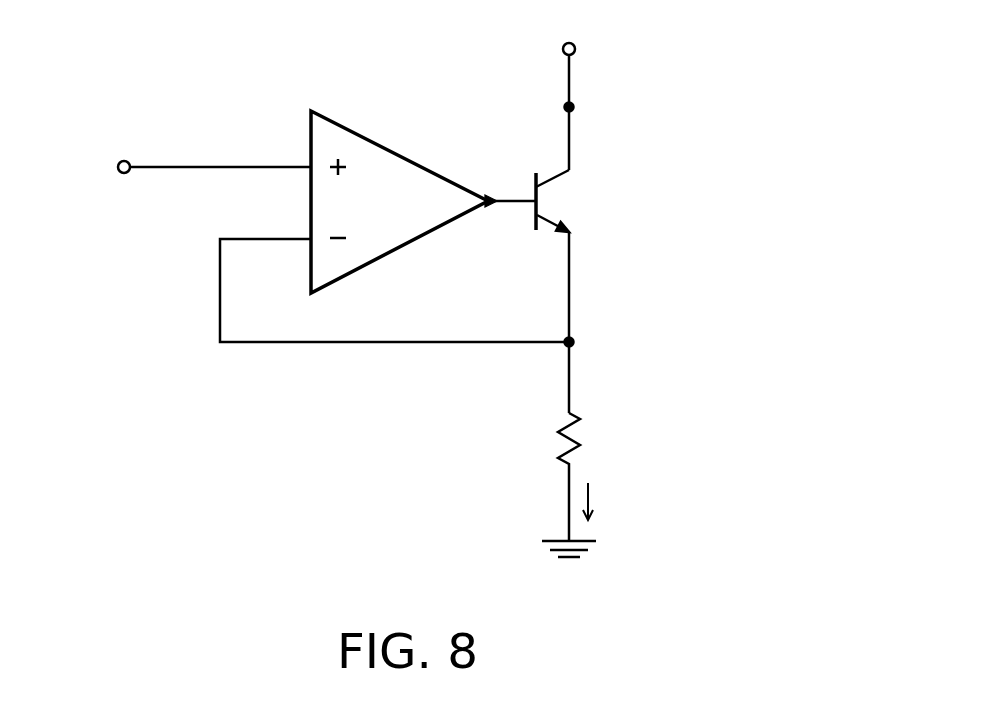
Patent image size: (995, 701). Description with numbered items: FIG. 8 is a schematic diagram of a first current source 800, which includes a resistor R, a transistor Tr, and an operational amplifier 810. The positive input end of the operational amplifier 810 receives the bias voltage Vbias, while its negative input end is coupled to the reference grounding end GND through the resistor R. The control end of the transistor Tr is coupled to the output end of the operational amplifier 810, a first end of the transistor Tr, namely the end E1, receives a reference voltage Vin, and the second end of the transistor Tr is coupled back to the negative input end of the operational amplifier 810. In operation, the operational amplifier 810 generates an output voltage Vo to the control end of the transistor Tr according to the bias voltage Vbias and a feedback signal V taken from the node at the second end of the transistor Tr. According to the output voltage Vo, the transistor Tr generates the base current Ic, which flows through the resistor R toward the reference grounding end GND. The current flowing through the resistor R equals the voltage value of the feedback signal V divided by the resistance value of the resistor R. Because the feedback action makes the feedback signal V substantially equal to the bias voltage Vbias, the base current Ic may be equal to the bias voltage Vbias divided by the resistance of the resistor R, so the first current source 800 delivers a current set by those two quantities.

The first current source 800 is at (412, 308).
The operational amplifier 810 is at (403, 157).
The bias voltage Vbias is at (189, 159).
The reference voltage Vin is at (570, 57).
The end E1 is at (586, 130).
The transistor Tr is at (567, 256).
The output voltage Vo is at (501, 181).
The feedback signal V is at (397, 293).
The resistor R is at (581, 441).
The base current Ic is at (602, 501).
The reference grounding end GND is at (569, 568).